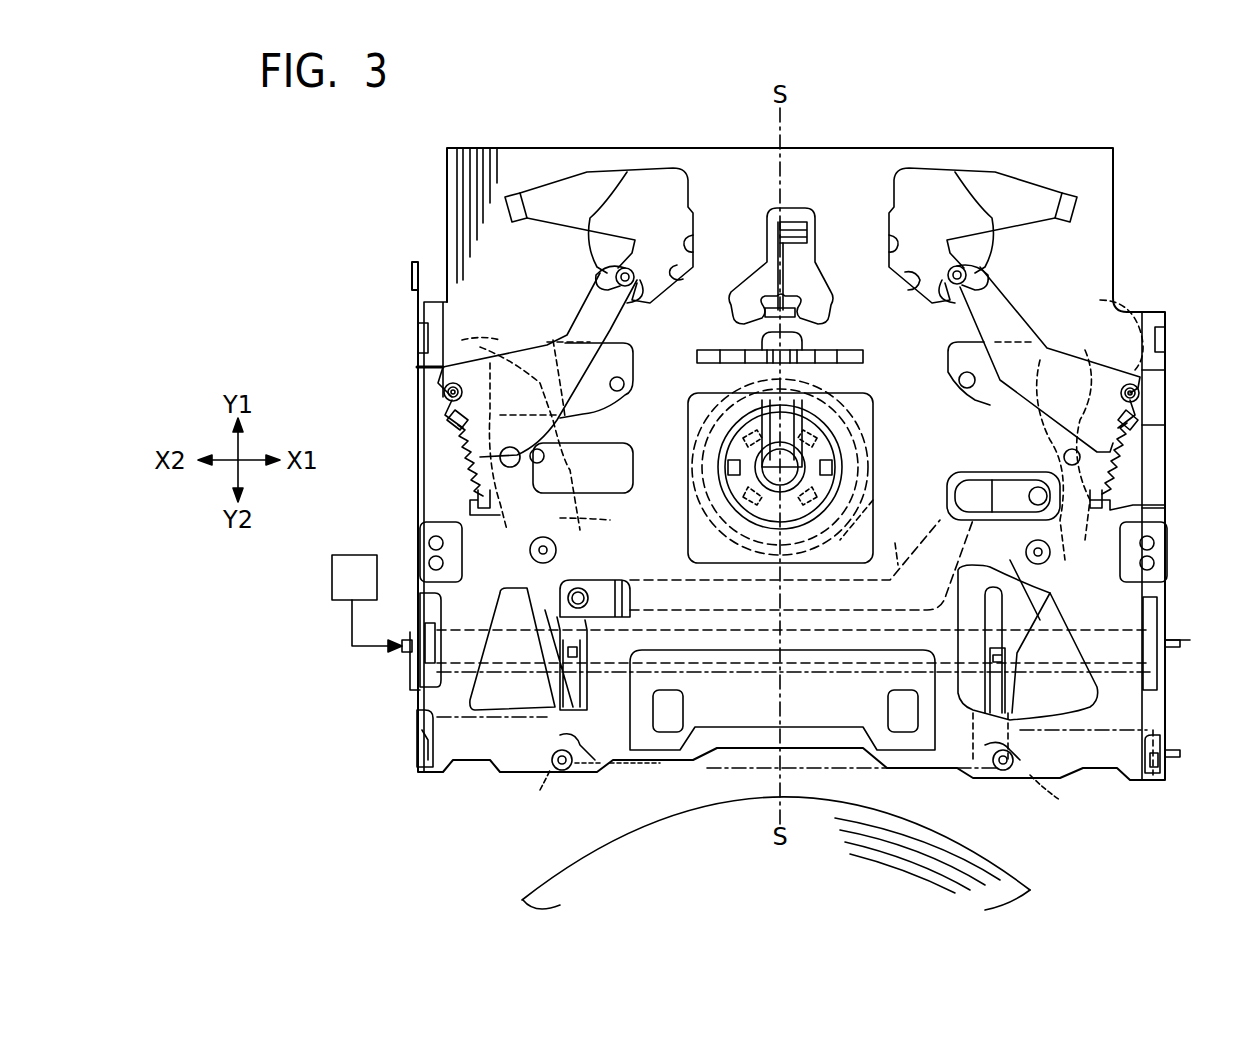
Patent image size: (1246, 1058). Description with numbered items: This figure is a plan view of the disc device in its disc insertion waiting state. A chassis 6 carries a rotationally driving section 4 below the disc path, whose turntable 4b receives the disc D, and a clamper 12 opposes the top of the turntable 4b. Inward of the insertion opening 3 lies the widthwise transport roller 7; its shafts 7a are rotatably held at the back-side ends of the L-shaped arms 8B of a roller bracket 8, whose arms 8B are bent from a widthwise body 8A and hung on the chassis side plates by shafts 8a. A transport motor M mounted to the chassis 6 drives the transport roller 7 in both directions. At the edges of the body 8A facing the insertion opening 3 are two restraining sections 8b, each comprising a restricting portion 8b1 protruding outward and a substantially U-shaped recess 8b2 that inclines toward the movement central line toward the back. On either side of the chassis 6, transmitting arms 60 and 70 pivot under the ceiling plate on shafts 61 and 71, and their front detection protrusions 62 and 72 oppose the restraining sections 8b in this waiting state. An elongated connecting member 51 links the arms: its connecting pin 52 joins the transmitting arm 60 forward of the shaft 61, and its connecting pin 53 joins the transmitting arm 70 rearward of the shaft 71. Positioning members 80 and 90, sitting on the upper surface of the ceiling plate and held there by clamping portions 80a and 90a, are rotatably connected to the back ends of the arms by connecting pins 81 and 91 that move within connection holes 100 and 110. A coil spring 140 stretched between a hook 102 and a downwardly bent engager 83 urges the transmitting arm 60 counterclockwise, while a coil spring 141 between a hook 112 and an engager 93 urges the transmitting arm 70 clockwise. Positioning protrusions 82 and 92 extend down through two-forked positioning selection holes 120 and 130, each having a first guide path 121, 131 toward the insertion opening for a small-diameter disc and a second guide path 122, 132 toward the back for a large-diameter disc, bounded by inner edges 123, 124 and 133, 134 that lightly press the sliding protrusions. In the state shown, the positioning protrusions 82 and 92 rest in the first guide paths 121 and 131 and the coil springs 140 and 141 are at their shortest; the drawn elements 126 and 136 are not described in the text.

The insertion opening 3 is at (505, 810).
The rotationally driving section 4 is at (845, 420).
The turntable 4b is at (870, 450).
The chassis 6 is at (1100, 170).
The transport roller 7 is at (462, 640).
The shaft 7a is at (1192, 643).
The roller bracket 8 is at (457, 730).
The shaft 8a is at (410, 738).
The body 8A is at (715, 760).
The arm 8B is at (410, 708).
The restraining section 8b is at (668, 800).
The restricting portion 8b1 is at (794, 786).
The recess 8b2 is at (788, 786).
The clamper 12 is at (945, 505).
The connecting member 51 is at (895, 543).
The connecting pin 52 is at (590, 598).
The connecting pin 53 is at (1022, 552).
The transmitting arm 60 is at (602, 517).
The shaft 61 is at (556, 548).
The detection protrusion 62 is at (557, 779).
The transmitting arm 70 is at (1050, 560).
The shaft 71 is at (1040, 600).
The detection protrusion 72 is at (1040, 779).
The positioning member 80 is at (572, 382).
The clamping portion 80a is at (521, 409).
The connecting pin 81 is at (445, 395).
The positioning protrusion 82 is at (634, 283).
The engager 83 is at (450, 420).
The positioning member 90 is at (1010, 395).
The clamping portion 90a is at (1001, 417).
The connecting pin 91 is at (1140, 398).
The positioning protrusion 92 is at (990, 282).
The engager 93 is at (1135, 428).
The connection hole 100 is at (610, 380).
The hook 102 is at (475, 498).
The connection hole 110 is at (975, 395).
The hook 112 is at (1110, 500).
The positioning selection hole 120 is at (633, 200).
The first guide path 121 is at (660, 180).
The second guide path 122 is at (595, 180).
The inner edge 123 is at (702, 288).
The inner edge 124 is at (698, 248).
The arm tip 126 is at (528, 180).
The positioning selection hole 130 is at (953, 195).
The first guide path 131 is at (923, 180).
The second guide path 132 is at (990, 180).
The inner edge 133 is at (905, 283).
The inner edge 134 is at (884, 240).
The arm tip 136 is at (1055, 180).
The coil spring 140 is at (455, 468).
The coil spring 141 is at (1120, 470).
The transport motor M is at (333, 580).
The disc D is at (1010, 895).